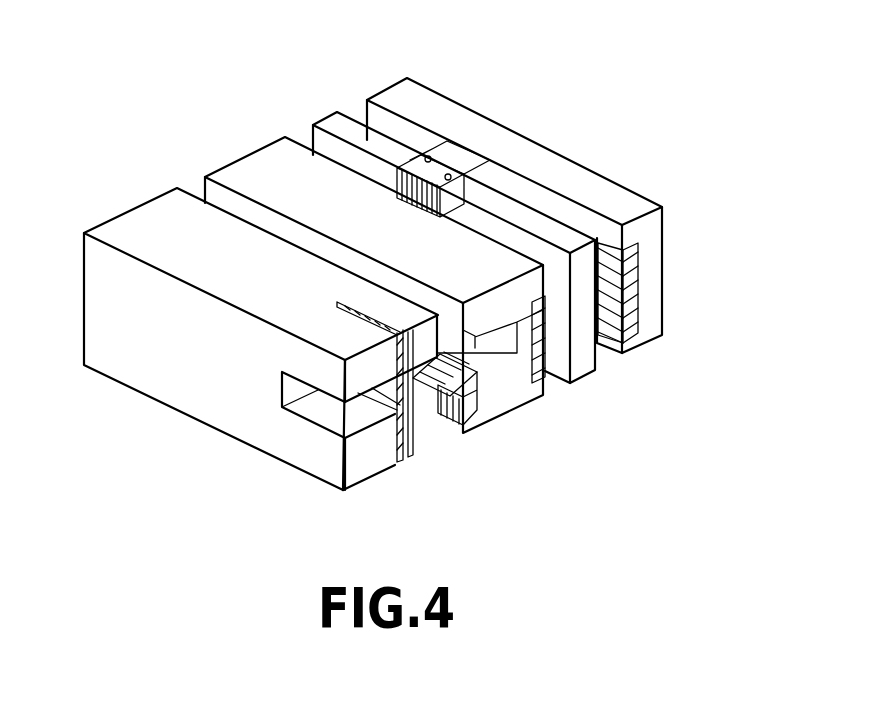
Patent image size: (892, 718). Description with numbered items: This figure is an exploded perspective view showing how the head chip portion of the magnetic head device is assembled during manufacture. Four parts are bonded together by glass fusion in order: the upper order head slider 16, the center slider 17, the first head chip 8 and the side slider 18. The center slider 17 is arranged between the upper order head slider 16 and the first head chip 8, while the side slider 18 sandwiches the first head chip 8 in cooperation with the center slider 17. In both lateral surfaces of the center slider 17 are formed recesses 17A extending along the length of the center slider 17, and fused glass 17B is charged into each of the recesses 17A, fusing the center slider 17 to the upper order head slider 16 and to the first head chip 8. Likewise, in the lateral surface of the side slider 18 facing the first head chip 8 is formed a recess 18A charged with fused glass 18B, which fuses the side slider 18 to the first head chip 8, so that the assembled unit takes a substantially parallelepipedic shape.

The upper order head slider 16 is at (185, 385).
The center slider 17 is at (265, 172).
The recess 17A is at (538, 397).
The fused glass 17B is at (587, 377).
The first head chip 8 is at (346, 123).
The side slider 18 is at (533, 160).
The recess 18A is at (633, 290).
The fused glass 18B is at (633, 317).